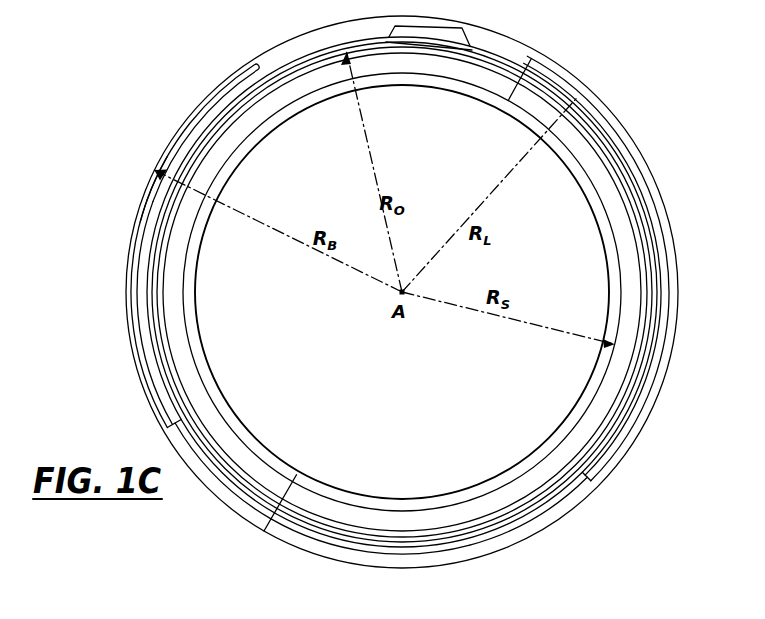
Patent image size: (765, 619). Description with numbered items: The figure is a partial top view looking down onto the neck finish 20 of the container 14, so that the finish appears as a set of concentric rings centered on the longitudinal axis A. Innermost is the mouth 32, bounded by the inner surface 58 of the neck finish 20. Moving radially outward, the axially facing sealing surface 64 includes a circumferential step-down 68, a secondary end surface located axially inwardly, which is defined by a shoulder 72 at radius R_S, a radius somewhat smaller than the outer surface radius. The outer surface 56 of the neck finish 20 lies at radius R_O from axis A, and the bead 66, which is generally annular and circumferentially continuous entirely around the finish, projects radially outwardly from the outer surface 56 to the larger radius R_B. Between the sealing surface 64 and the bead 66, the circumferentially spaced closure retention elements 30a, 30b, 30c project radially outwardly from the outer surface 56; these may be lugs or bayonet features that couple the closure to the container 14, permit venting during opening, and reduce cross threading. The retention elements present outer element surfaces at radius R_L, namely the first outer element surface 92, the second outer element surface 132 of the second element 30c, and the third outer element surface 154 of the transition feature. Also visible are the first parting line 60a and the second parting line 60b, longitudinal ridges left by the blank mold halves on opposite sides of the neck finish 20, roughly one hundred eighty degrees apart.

The container 14 is at (70, 183).
The neck finish 20 is at (687, 331).
The closure retention element 30a is at (584, 103).
The closure retention element 30b is at (130, 293).
The second element 30c is at (528, 533).
The mouth 32 is at (579, 185).
The outer surface 56 is at (330, 52).
The inner surface 58 is at (288, 116).
The first parting line 60a is at (516, 95).
The second parting line 60b is at (273, 523).
The sealing surface 64 is at (243, 460).
The bead 66 is at (185, 125).
The step-down 68 is at (614, 243).
The shoulder 72 is at (621, 305).
The first outer element surface 92 is at (613, 125).
The second outer element surface 132 is at (130, 247).
The third outer element surface 154 is at (440, 560).